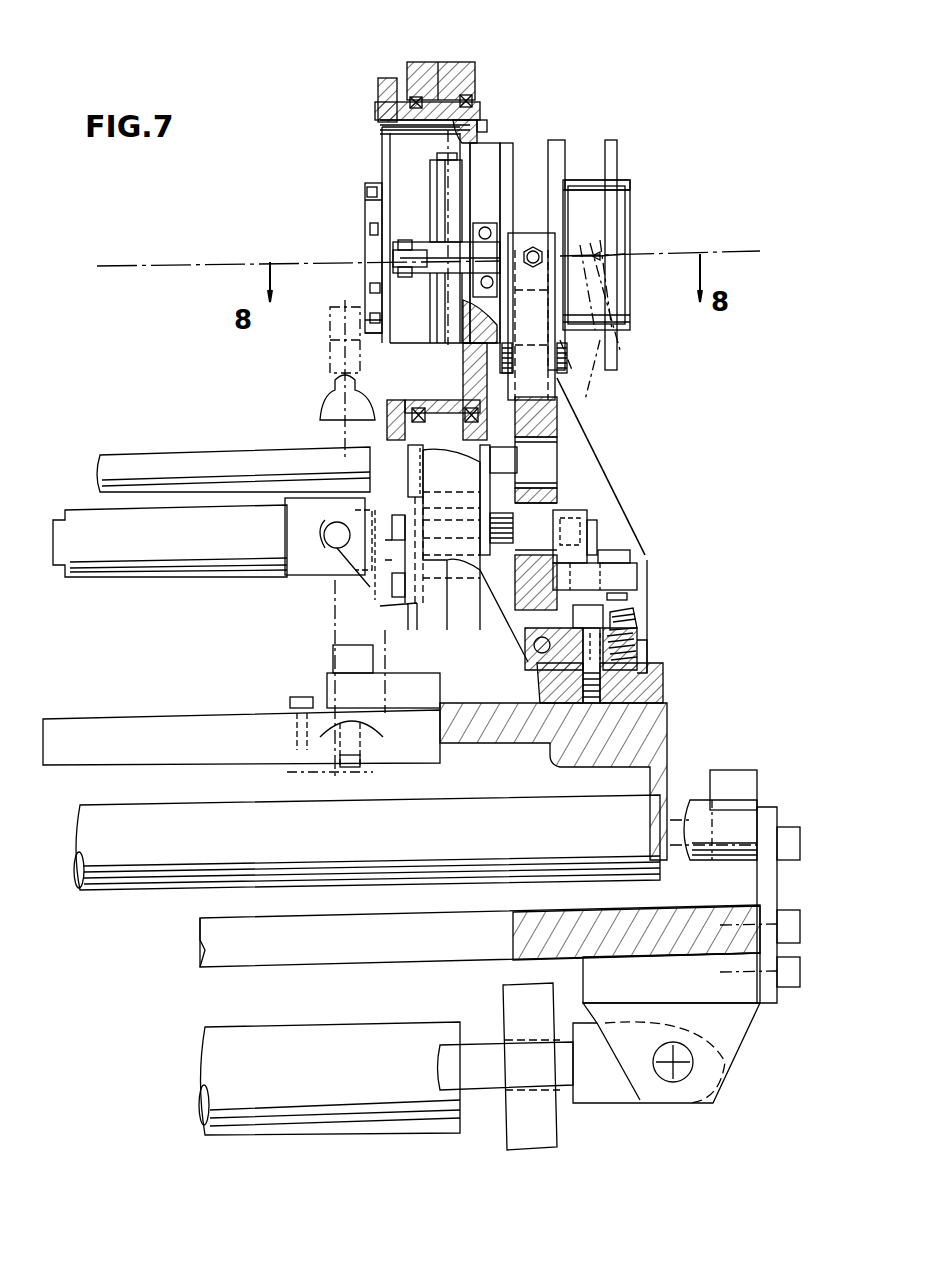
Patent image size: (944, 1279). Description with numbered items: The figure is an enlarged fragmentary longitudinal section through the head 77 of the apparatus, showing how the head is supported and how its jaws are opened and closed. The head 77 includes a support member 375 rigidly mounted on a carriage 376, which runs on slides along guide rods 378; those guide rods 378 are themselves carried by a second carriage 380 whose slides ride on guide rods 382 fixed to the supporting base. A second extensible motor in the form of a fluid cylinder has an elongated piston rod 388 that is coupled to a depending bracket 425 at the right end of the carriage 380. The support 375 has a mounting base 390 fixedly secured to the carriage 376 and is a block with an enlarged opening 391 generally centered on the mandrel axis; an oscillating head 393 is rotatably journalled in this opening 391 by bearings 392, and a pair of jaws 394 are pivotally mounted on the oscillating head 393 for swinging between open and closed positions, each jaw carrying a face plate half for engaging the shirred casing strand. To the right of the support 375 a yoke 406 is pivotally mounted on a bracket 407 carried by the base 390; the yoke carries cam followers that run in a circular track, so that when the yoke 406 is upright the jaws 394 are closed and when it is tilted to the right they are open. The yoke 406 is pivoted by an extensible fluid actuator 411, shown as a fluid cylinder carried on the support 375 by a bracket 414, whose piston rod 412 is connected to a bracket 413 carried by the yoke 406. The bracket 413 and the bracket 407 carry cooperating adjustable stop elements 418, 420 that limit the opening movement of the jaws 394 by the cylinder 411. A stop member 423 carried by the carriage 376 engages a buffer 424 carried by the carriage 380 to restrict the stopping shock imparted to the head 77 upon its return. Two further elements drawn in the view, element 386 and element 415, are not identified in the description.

The head 77 is at (551, 84).
The support member 375 is at (472, 70).
The carriage 376 is at (200, 720).
The guide rods 378 is at (118, 880).
The carriage 380 is at (283, 950).
The guide rods 382 is at (242, 1036).
The rod 386 is at (224, 466).
The piston rod 388 is at (455, 1052).
The mounting base 390 is at (340, 683).
The enlarged opening 391 is at (432, 78).
The bearings 392 is at (406, 98).
The oscillating head 393 is at (380, 88).
The jaws 394 is at (410, 182).
The yoke 406 is at (556, 404).
The bracket 407 is at (637, 645).
The extensible fluid actuator 411 is at (155, 565).
The piston rod 412 is at (393, 607).
The bracket 413 is at (590, 520).
The bracket 414 is at (336, 556).
The shaft 415 is at (407, 467).
The adjustable stop element 418 is at (637, 590).
The adjustable stop element 420 is at (635, 615).
The stop member 423 is at (668, 757).
The buffer 424 is at (712, 815).
The depending bracket 425 is at (725, 1045).